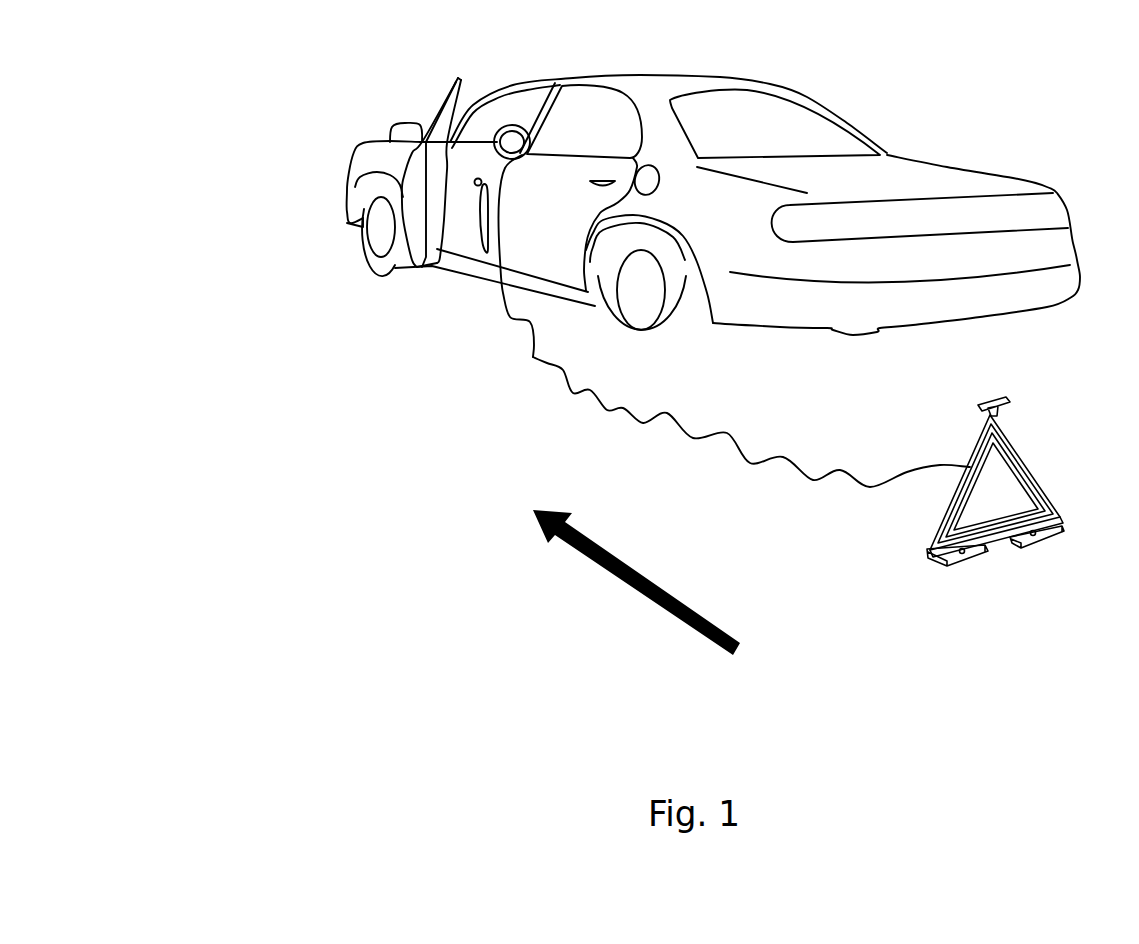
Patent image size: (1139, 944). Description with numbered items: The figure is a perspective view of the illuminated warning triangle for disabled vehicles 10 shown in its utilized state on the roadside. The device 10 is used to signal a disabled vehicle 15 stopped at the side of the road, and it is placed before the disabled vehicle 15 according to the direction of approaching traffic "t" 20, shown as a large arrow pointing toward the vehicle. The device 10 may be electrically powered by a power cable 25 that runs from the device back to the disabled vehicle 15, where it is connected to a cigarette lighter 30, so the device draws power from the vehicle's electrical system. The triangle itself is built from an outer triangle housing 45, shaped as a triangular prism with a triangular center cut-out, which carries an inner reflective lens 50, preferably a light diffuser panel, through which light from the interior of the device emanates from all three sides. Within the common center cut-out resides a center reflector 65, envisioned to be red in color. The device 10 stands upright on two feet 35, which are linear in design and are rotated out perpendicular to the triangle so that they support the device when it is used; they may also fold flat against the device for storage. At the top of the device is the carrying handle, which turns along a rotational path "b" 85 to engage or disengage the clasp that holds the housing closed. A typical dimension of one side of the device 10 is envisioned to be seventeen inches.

The illuminated warning triangle for disabled vehicles 10 is at (276, 646).
The disabled vehicle 15 is at (877, 192).
The direction of approaching traffic 20 is at (663, 607).
The power cable 25 is at (592, 398).
The cigarette lighter 30 is at (475, 185).
The feet 35 is at (968, 560).
The outer triangle housing 45 is at (1053, 515).
The inner reflective lens 50 is at (1018, 440).
The center reflector 65 is at (985, 513).
The rotational path "b" 85 is at (1005, 395).